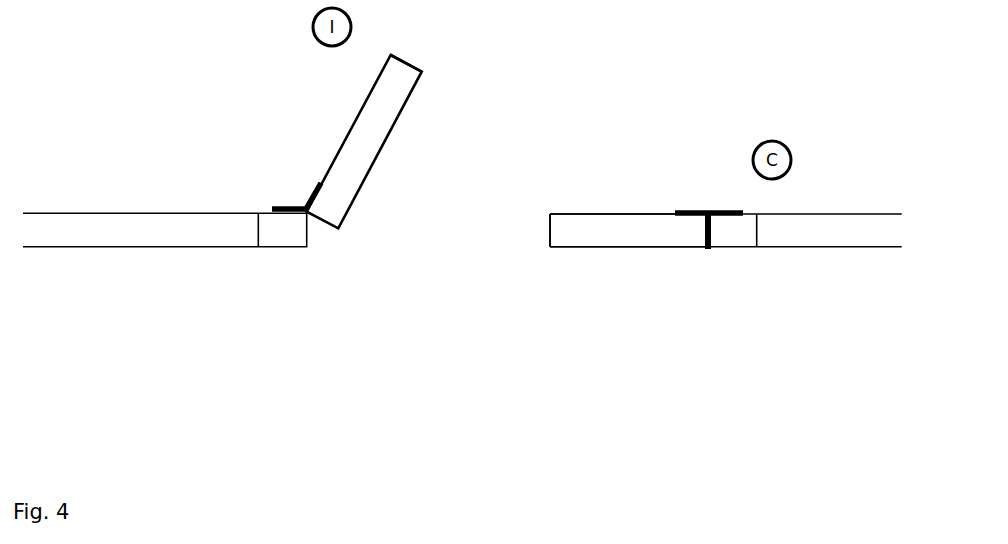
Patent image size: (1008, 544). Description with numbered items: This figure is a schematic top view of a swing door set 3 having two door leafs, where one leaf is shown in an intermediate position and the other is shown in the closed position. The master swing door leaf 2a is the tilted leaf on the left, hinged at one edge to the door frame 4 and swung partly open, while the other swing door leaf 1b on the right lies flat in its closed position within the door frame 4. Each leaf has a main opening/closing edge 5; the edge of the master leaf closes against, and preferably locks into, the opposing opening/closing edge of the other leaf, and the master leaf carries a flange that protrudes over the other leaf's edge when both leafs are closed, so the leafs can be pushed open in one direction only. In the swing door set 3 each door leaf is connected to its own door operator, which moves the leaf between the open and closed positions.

The master swing door leaf 2a is at (350, 153).
The swing door leaf 1b is at (603, 216).
The door frame 4 is at (286, 236).
The main opening/closing edge 5 is at (540, 196).
The swing door set 3 is at (520, 355).